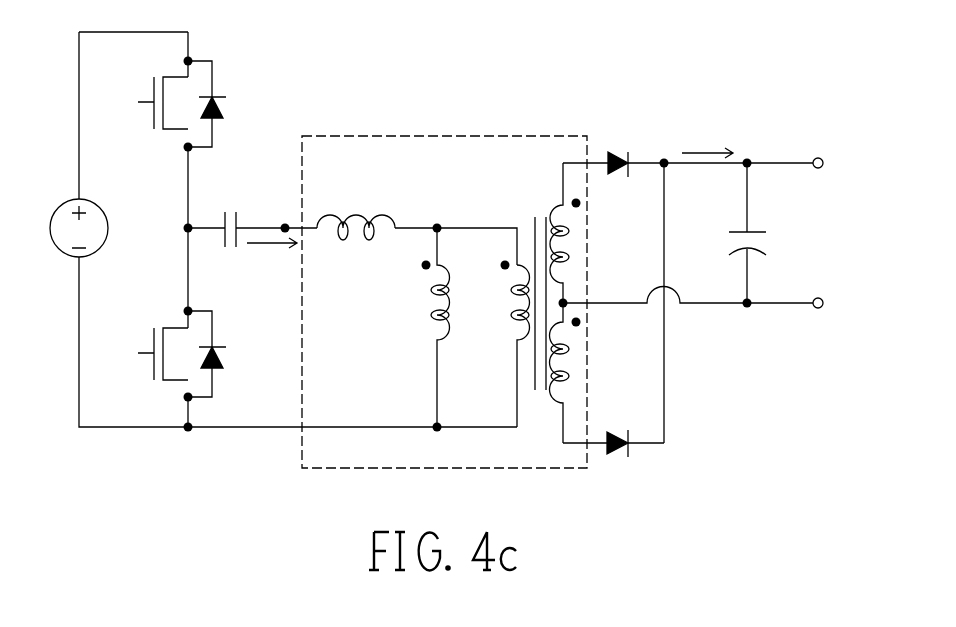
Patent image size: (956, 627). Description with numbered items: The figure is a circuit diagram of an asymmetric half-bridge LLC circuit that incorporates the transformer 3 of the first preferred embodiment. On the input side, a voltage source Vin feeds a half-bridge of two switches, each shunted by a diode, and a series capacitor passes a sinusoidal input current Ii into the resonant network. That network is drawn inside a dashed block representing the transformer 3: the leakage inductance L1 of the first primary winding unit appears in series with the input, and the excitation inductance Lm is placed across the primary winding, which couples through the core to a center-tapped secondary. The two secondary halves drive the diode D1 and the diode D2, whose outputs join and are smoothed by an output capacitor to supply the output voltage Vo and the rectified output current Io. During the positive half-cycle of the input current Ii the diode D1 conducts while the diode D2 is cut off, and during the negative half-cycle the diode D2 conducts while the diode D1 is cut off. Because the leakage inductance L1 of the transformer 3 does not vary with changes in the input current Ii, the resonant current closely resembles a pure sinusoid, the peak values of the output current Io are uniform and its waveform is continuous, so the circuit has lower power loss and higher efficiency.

The transformer 3 is at (494, 124).
The input voltage source Vin is at (84, 210).
The input current Ii is at (272, 257).
The leakage inductance L1 is at (356, 211).
The excitation inductance Lm is at (421, 327).
The diode D1 is at (618, 149).
The diode D2 is at (616, 428).
The output voltage / output capacitor Vo is at (783, 233).
The output current Io is at (707, 143).